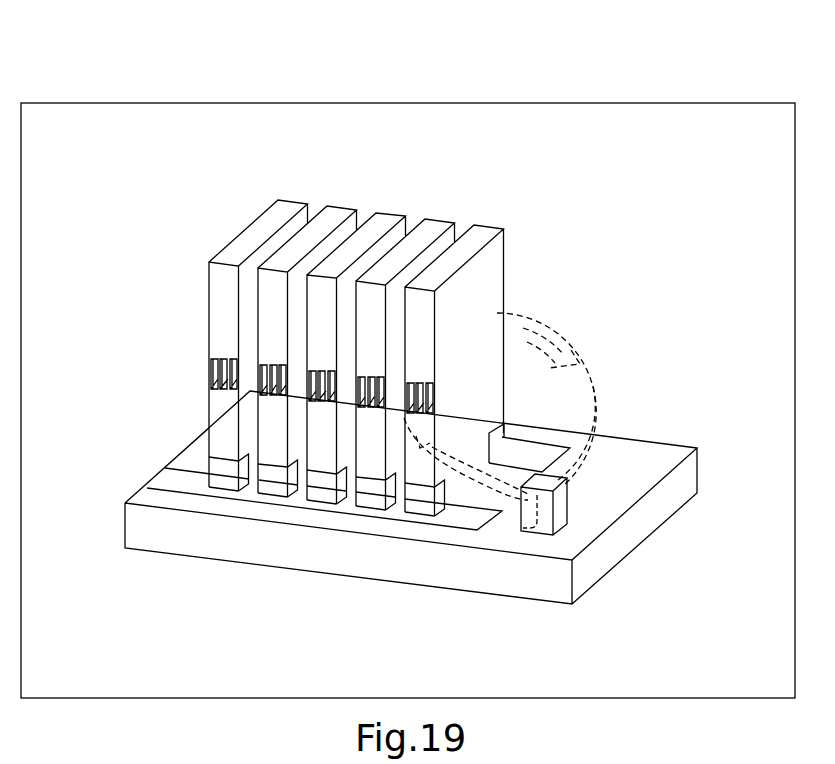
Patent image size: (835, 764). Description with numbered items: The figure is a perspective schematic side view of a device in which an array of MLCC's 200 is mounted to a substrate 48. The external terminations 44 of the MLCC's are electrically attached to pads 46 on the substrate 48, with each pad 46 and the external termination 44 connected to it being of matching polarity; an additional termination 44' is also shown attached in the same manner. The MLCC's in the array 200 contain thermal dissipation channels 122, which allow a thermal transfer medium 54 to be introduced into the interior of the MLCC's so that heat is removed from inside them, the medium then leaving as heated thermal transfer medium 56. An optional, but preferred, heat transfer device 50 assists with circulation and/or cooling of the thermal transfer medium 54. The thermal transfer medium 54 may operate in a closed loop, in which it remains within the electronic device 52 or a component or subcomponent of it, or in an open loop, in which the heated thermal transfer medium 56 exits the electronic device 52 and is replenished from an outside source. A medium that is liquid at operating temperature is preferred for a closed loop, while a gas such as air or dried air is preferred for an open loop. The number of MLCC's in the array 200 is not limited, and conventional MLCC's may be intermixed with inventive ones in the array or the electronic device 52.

The array of MLCC's 200 is at (482, 235).
The thermal dissipation channels 122 is at (420, 397).
The external terminations 44 is at (327, 554).
The rear support block 44' is at (516, 407).
The pads 46 is at (167, 483).
The substrate 48 is at (438, 571).
The heat transfer device 50 is at (562, 515).
The electronic device 52 is at (619, 103).
The thermal transfer medium 54 is at (506, 521).
The heated thermal transfer medium 56 is at (592, 376).